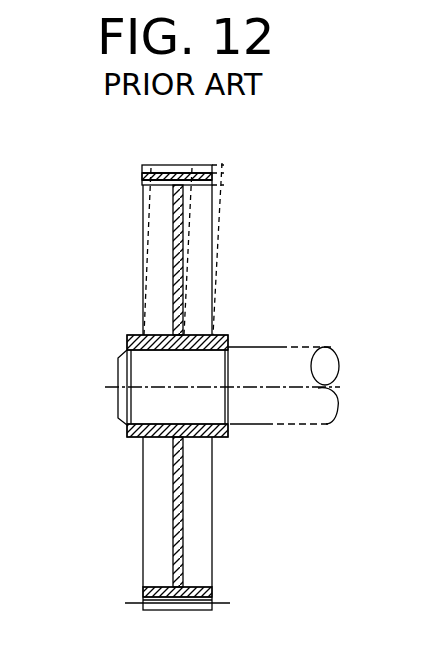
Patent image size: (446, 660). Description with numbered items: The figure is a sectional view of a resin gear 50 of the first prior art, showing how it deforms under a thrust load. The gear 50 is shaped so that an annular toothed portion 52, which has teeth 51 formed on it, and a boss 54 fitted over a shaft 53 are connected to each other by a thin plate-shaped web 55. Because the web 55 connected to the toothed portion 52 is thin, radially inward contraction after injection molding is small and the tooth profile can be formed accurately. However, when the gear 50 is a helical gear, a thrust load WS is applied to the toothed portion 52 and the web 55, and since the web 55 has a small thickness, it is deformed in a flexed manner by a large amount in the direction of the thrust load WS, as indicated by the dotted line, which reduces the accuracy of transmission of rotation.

The gear 50 is at (218, 232).
The teeth 51 is at (175, 163).
The thrust load WS is at (142, 173).
The toothed portion 52 is at (150, 188).
The shaft 53 is at (253, 347).
The boss 54 is at (127, 337).
The web 55 is at (173, 231).